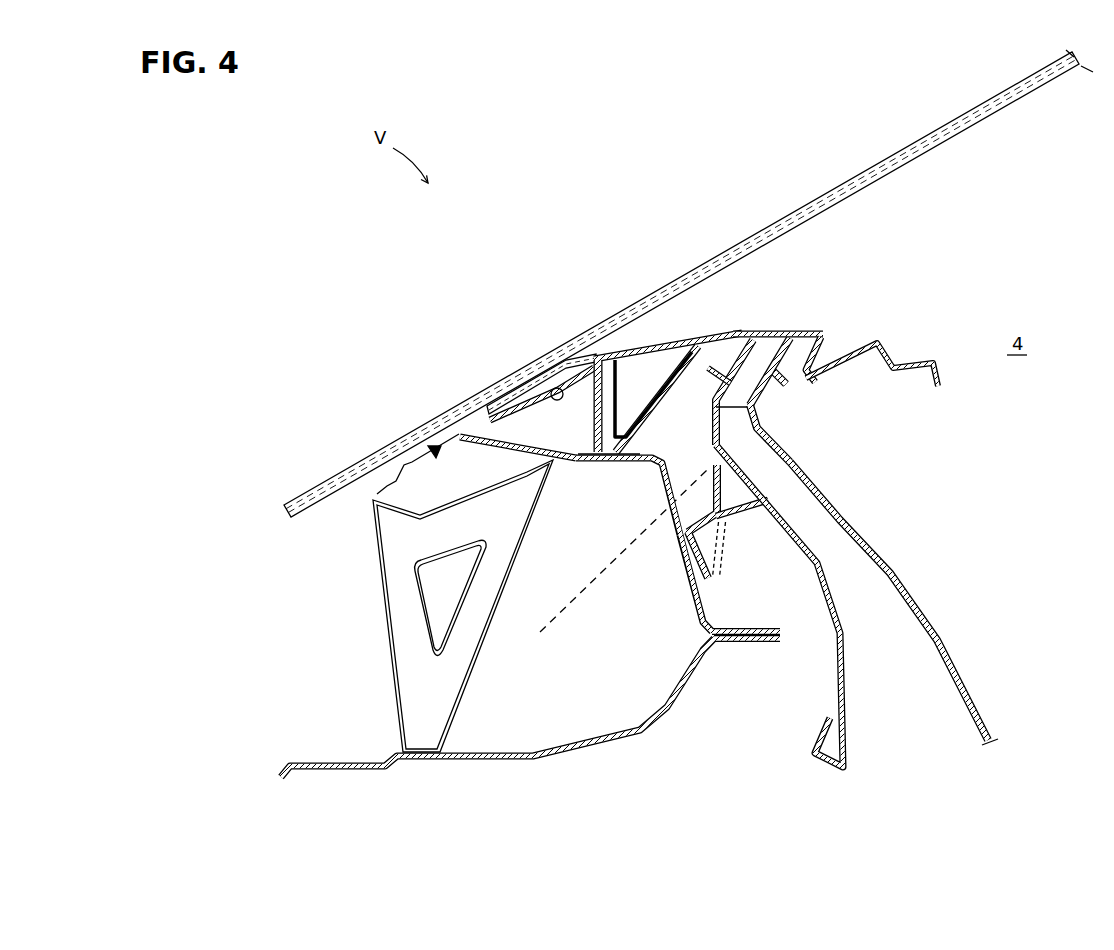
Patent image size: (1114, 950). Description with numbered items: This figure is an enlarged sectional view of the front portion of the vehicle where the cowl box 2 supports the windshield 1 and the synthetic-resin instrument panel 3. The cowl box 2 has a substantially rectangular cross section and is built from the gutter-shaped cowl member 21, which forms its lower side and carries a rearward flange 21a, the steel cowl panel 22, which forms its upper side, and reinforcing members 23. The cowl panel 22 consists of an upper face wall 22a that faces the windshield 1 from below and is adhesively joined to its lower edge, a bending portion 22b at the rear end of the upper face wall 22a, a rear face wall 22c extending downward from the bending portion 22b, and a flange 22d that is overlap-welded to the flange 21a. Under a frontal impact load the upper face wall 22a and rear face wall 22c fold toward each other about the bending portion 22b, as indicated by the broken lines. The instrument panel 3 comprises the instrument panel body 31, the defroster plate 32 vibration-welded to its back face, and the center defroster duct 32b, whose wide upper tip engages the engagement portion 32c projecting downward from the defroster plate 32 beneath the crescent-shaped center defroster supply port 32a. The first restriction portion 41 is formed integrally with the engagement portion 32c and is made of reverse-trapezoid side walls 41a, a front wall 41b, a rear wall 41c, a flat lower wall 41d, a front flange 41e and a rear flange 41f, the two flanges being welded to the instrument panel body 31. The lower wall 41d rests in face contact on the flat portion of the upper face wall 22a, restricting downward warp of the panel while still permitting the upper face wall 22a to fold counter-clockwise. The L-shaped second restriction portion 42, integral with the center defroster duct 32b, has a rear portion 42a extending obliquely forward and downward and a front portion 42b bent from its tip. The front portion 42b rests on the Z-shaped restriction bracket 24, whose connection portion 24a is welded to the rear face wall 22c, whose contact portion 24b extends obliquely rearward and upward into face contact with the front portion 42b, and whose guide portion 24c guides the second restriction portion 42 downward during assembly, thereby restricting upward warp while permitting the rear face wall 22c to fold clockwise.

The windshield 1 is at (995, 100).
The cowl box 2 is at (537, 596).
The cowl member 21 is at (530, 738).
The flange 21a is at (744, 647).
The cowl panel 22 is at (611, 549).
The upper face wall 22a is at (560, 460).
The bending portion 22b is at (653, 466).
The rear face wall 22c is at (703, 617).
The flange 22d is at (757, 628).
The reinforcing member 23 is at (407, 688).
The restriction bracket 24 is at (647, 531).
The connection portion 24a is at (668, 573).
The contact portion 24b is at (688, 514).
The guide portion 24c is at (714, 478).
The instrument panel 3 is at (842, 502).
The instrument panel body 31 is at (770, 328).
The defroster plate 32 is at (842, 515).
The center defroster supply port 32a is at (787, 332).
The center defroster duct 32b is at (953, 660).
The engagement portion 32c is at (780, 372).
The first restriction portion 41 is at (614, 378).
The side wall 41a is at (604, 352).
The front wall 41b is at (592, 415).
The rear wall 41c is at (667, 393).
The lower wall 41d is at (601, 457).
The front flange 41e is at (540, 388).
The rear flange 41f is at (703, 333).
The second restriction portion 42 is at (783, 606).
The rear portion 42a is at (800, 522).
The front portion 42b is at (712, 540).